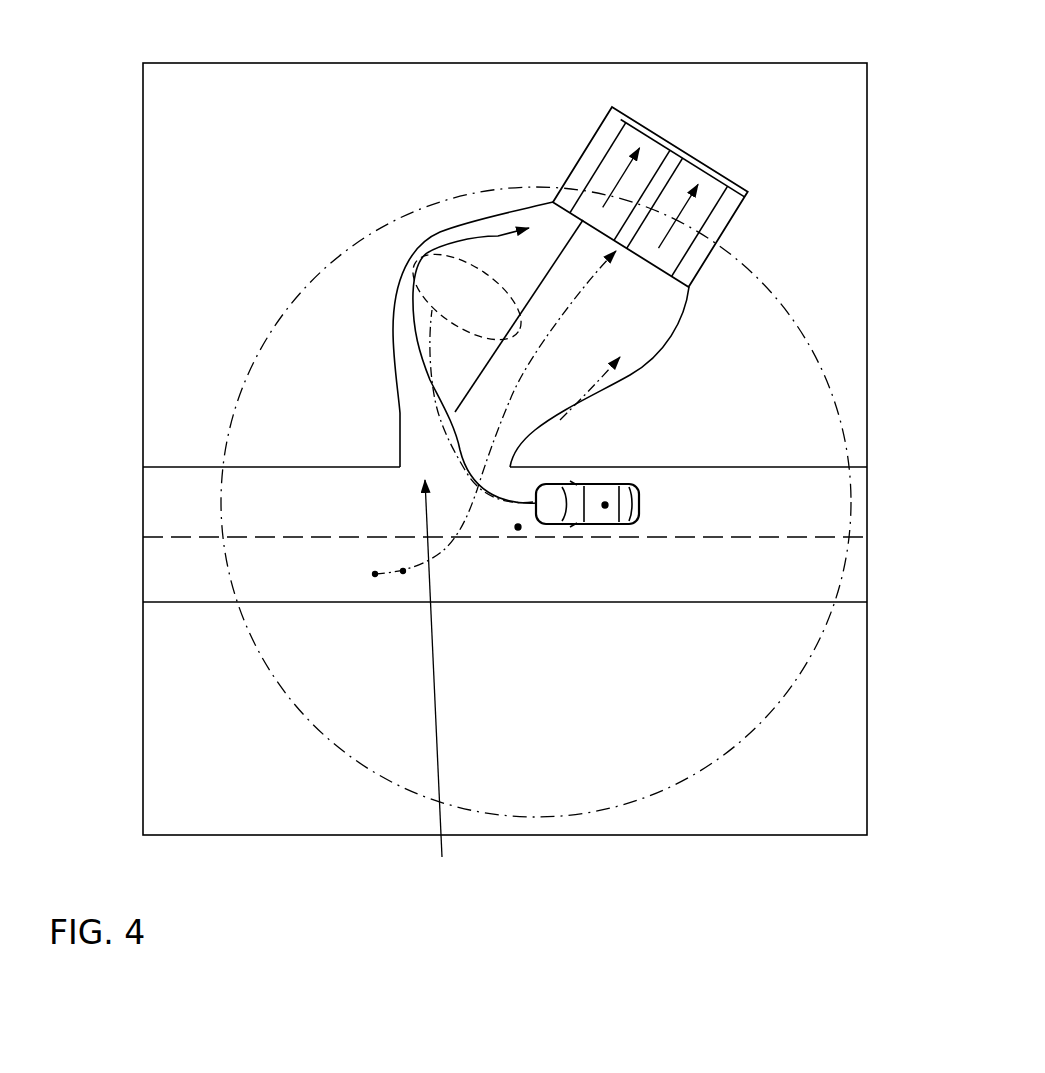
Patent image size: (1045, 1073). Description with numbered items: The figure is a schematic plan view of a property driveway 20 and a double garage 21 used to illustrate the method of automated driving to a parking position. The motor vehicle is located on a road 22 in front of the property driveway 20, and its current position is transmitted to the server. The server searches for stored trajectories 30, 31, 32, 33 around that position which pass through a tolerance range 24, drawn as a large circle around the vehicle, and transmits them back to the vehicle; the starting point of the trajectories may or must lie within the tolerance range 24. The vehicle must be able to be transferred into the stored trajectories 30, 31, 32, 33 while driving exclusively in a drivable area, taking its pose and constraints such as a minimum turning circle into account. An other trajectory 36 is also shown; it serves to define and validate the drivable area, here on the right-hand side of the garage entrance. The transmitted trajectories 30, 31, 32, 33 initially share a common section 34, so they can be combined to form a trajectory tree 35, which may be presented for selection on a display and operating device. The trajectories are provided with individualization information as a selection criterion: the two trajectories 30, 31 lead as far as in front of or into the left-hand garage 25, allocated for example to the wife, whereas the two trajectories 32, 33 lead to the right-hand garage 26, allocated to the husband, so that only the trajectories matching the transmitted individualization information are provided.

The property driveway 20 is at (443, 683).
The double garage 21 is at (589, 144).
The road 22 is at (208, 577).
The tolerance range 24 is at (720, 758).
The left-hand garage 25 is at (628, 140).
The right-hand garage 26 is at (712, 185).
The trajectory 30 is at (498, 236).
The trajectory 31 is at (550, 270).
The trajectory 32 is at (633, 290).
The trajectory 33 is at (608, 368).
The common section 34 is at (518, 527).
The trajectory tree 35 is at (414, 428).
The other trajectory 36 is at (375, 574).